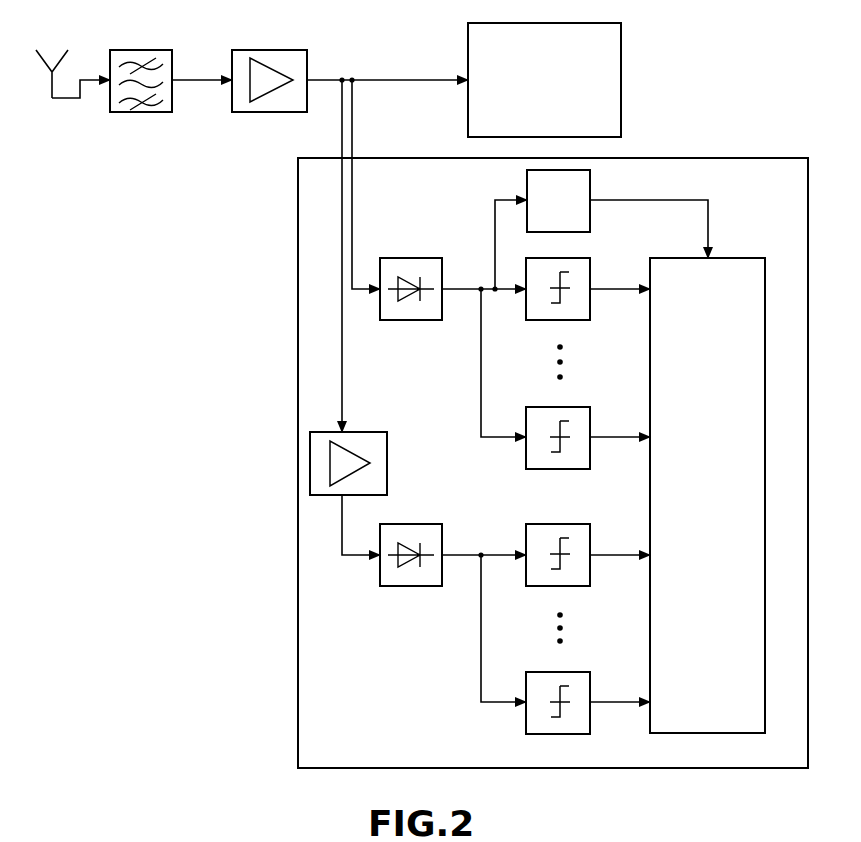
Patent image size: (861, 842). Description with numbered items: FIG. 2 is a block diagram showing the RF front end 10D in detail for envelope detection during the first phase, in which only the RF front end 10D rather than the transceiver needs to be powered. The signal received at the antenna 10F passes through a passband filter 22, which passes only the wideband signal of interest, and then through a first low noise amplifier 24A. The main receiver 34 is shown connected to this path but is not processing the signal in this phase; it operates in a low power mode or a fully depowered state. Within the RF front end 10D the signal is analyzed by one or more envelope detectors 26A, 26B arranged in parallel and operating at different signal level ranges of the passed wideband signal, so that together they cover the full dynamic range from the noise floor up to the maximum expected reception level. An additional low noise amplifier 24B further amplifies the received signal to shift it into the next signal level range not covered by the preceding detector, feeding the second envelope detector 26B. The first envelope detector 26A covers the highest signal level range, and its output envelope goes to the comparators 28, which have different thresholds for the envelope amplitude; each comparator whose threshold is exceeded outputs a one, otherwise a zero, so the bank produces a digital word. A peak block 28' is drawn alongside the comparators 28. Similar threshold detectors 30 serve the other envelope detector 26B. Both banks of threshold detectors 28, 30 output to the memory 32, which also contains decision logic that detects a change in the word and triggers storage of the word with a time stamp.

The antenna 10F is at (51, 94).
The RF front end 10D is at (298, 725).
The passband filter 22 is at (156, 113).
The first low noise amplifier 24A is at (293, 50).
The additional low noise amplifier 24B is at (367, 432).
The first envelope detector 26A is at (417, 258).
The second envelope detector 26B is at (427, 523).
The comparators 28 is at (580, 363).
The peak detector 28' is at (587, 205).
The threshold detectors 30 is at (575, 586).
The memory 32 is at (743, 256).
The main receiver 34 is at (622, 50).